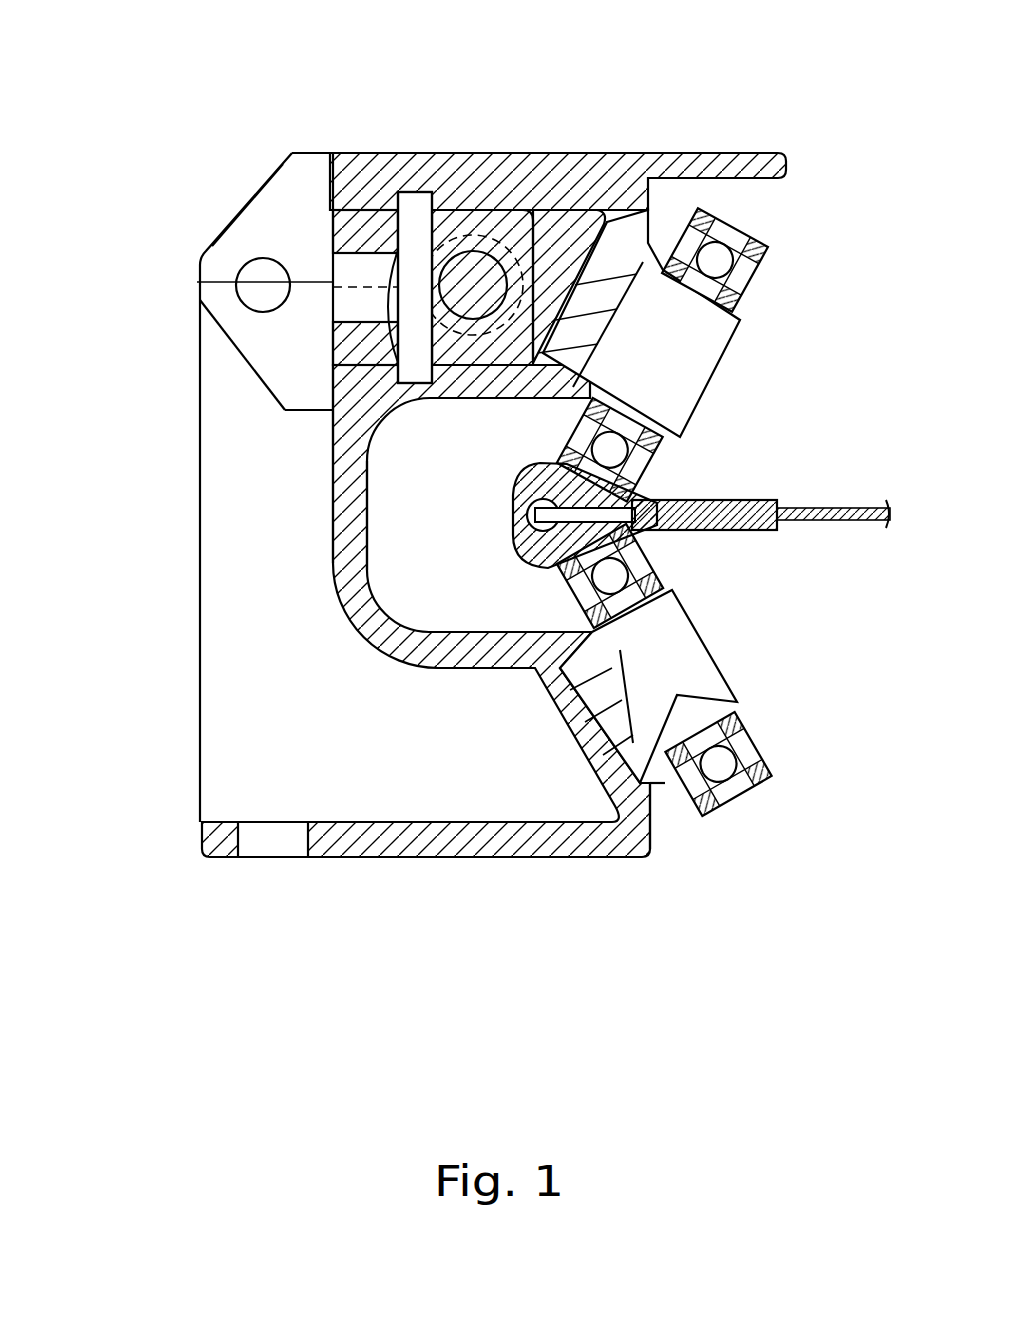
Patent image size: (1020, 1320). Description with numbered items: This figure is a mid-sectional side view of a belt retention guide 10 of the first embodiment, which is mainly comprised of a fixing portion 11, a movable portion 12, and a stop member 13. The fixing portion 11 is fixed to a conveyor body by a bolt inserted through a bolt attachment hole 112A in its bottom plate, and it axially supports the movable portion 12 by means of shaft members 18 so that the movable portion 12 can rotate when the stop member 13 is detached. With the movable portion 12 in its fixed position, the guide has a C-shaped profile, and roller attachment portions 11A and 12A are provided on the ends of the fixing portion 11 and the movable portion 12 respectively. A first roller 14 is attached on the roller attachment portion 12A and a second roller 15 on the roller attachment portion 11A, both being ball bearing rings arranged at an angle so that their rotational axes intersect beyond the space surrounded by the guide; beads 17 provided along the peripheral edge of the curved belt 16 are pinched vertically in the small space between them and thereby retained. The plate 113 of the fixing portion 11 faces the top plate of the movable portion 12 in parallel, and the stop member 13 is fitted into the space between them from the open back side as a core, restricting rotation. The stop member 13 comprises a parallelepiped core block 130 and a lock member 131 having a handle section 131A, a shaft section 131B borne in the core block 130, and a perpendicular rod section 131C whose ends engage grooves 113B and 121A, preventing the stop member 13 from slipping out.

The belt retention guide 10 is at (558, 948).
The fixing portion 11 is at (435, 862).
The roller attachment portion 11A is at (708, 647).
The bolt attachment hole 112A is at (238, 838).
The plate 113 is at (412, 400).
The groove 113B is at (333, 410).
The movable portion 12 is at (585, 150).
The roller attachment portion 12A is at (713, 381).
The stop member 13 is at (470, 195).
The core block 130 is at (486, 168).
The lock member 131 is at (220, 240).
The handle section 131A is at (262, 347).
The shaft section 131B is at (355, 257).
The rod section 131C is at (416, 192).
The groove 121A is at (197, 280).
The first roller 14 is at (748, 235).
The second roller 15 is at (753, 790).
The curved belt 16 is at (838, 502).
The beads 17 is at (517, 537).
The shaft members 18 is at (549, 212).